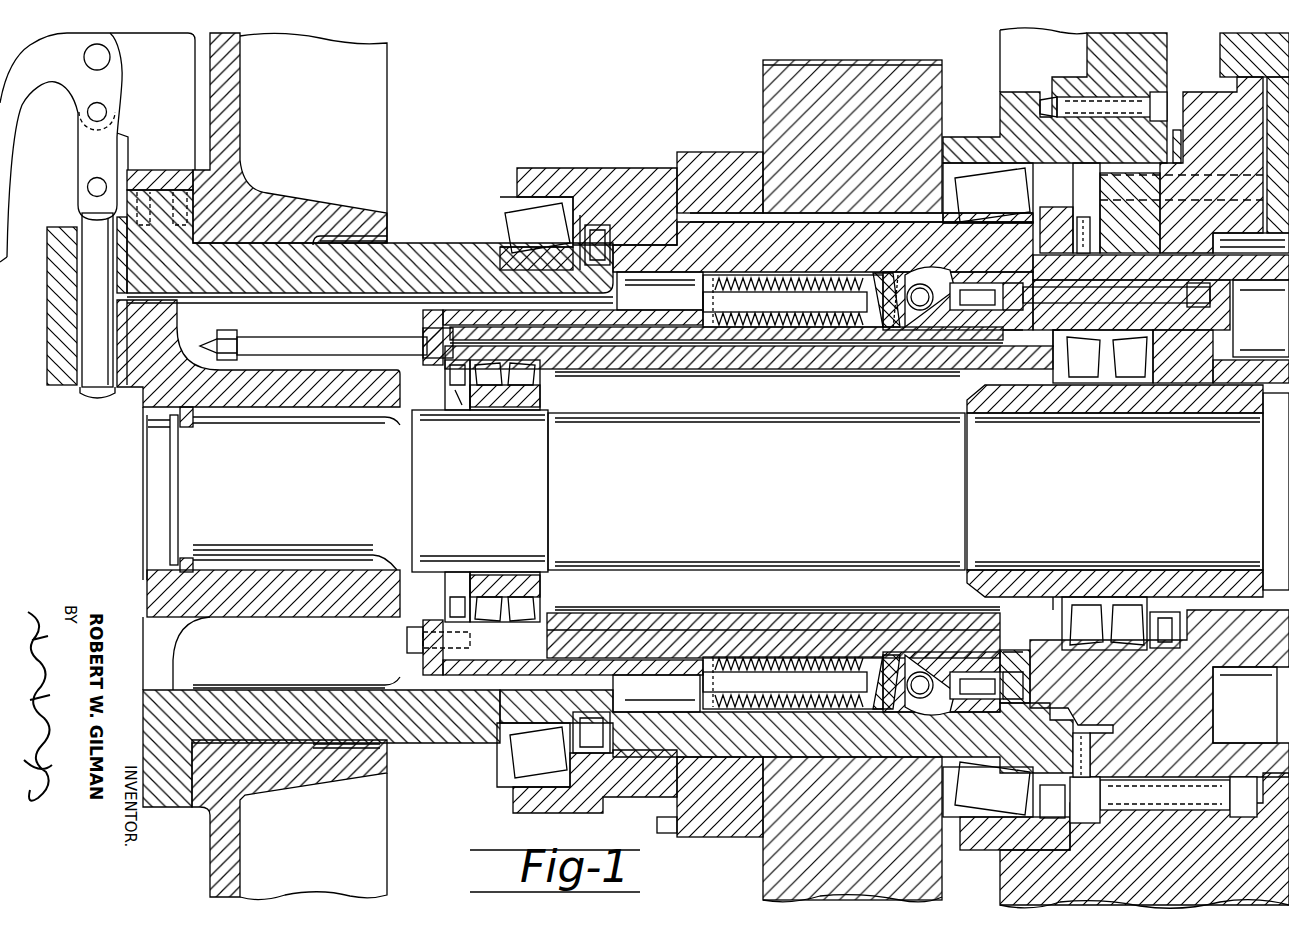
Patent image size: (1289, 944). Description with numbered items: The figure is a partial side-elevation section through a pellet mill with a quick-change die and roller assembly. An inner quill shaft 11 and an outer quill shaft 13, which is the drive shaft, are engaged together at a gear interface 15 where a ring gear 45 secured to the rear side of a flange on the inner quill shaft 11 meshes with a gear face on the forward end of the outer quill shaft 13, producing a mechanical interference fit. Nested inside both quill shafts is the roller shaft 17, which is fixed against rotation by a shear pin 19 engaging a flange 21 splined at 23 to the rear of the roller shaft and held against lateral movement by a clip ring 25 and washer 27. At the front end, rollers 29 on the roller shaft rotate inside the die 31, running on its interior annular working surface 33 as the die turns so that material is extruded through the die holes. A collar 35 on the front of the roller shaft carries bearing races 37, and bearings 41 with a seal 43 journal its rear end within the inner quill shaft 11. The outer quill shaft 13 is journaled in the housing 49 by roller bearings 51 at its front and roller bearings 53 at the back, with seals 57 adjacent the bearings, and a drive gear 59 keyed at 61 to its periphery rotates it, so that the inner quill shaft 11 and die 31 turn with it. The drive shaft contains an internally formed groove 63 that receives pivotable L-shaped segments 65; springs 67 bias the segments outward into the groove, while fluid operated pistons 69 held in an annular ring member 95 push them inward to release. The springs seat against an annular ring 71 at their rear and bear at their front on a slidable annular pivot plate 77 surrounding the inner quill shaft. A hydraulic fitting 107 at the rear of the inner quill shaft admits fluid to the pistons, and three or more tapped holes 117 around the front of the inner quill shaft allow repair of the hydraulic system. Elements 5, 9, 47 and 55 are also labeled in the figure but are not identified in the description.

The housing end wall 5 is at (321, 795).
The spring assembly 9 is at (900, 650).
The inner quill shaft 11 is at (1238, 142).
The outer quill shaft 13 is at (805, 262).
The gear interface 15 is at (1087, 235).
The roller shaft 17 is at (765, 490).
The shear pin 19 is at (88, 398).
The flange 21 is at (145, 400).
The spline 23 is at (310, 420).
The clip ring 25 is at (168, 423).
The washer 27 is at (185, 425).
The rollers 29 is at (1285, 395).
The die 31 is at (1275, 135).
The interior annular working surface 33 is at (1280, 212).
The collar 35 is at (1125, 385).
The bearing races 37 is at (1090, 385).
The bearings 41 is at (505, 410).
The seal 43 is at (458, 412).
The ring gear 45 is at (1158, 225).
The cap screw 47 is at (1170, 130).
The housing 49 is at (1020, 95).
The roller bearings 51 is at (968, 180).
The roller bearings 53 is at (520, 215).
The housing flange 55 is at (430, 258).
The seals 57 is at (595, 225).
The drive gear 59 is at (763, 102).
The key 61 is at (715, 215).
The internally formed groove 63 is at (925, 273).
The L-shaped segments 65 is at (905, 275).
The springs 67 is at (780, 330).
The pistons 69 is at (975, 312).
The annular ring 71 is at (730, 640).
The annular pivot plate 77 is at (905, 330).
The annular ring member 95 is at (1010, 660).
The hydraulic fitting 107 is at (333, 350).
The holes 117 is at (1222, 300).